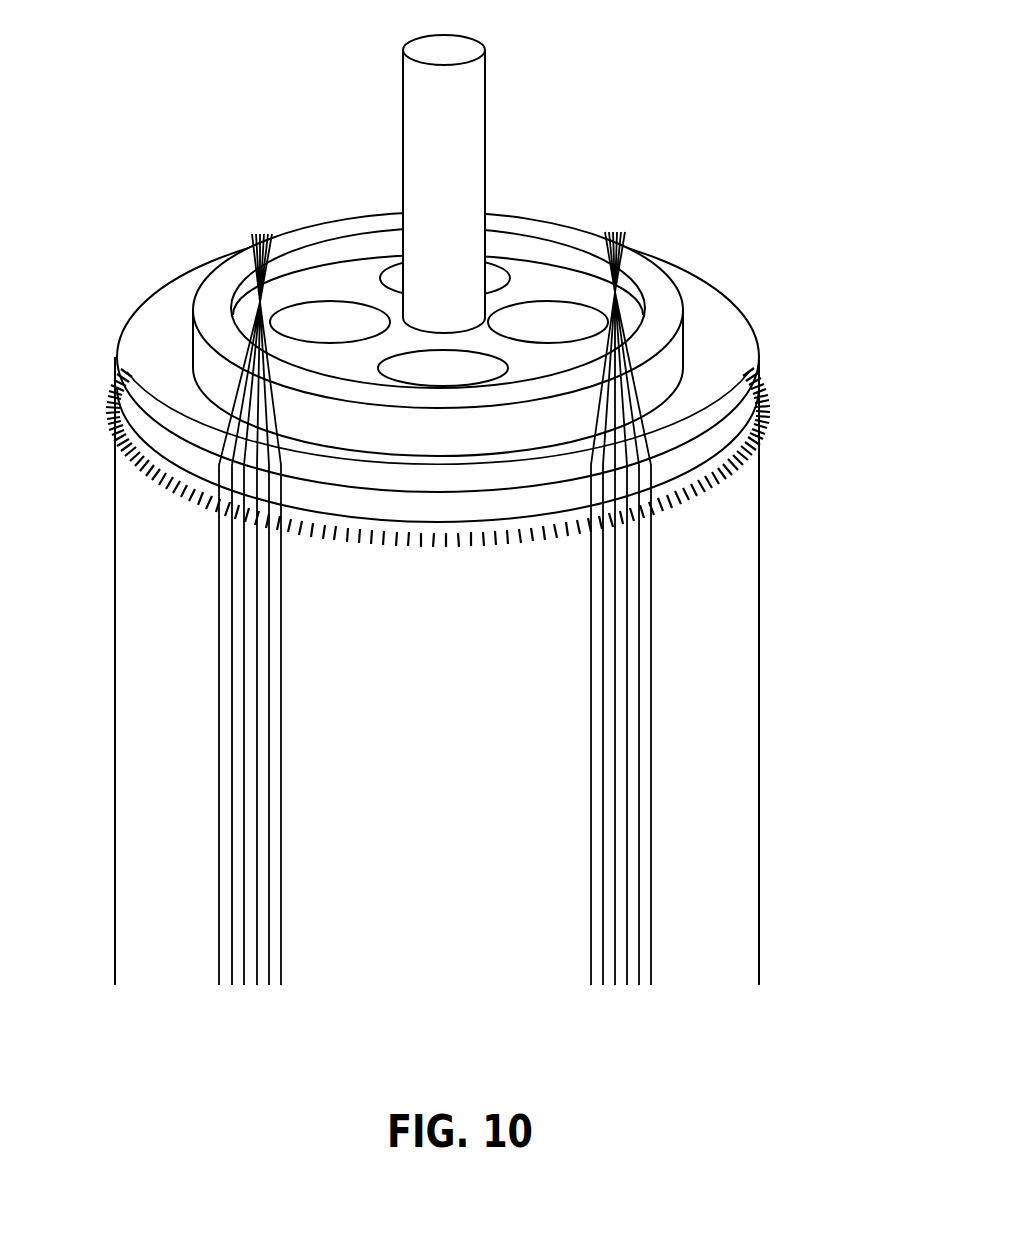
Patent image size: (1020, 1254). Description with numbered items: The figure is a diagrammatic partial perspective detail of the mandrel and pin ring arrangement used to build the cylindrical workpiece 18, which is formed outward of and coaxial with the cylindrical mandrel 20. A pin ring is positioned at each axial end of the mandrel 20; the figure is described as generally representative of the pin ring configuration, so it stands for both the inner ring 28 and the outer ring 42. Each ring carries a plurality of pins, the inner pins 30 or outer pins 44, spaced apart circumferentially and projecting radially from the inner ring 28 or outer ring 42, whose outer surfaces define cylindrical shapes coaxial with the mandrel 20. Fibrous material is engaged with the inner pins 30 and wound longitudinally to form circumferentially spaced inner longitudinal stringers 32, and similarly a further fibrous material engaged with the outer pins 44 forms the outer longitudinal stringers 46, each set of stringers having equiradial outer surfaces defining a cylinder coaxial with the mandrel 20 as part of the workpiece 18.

The cylindrical workpiece 18 is at (145, 523).
The mandrel 20 is at (463, 273).
The inner ring 28 is at (514, 448).
The outer ring 42 is at (767, 390).
The inner pins 30 is at (523, 372).
The outer pins 44 is at (744, 422).
The inner longitudinal stringers 32 is at (548, 608).
The outer longitudinal stringers 46 is at (656, 717).